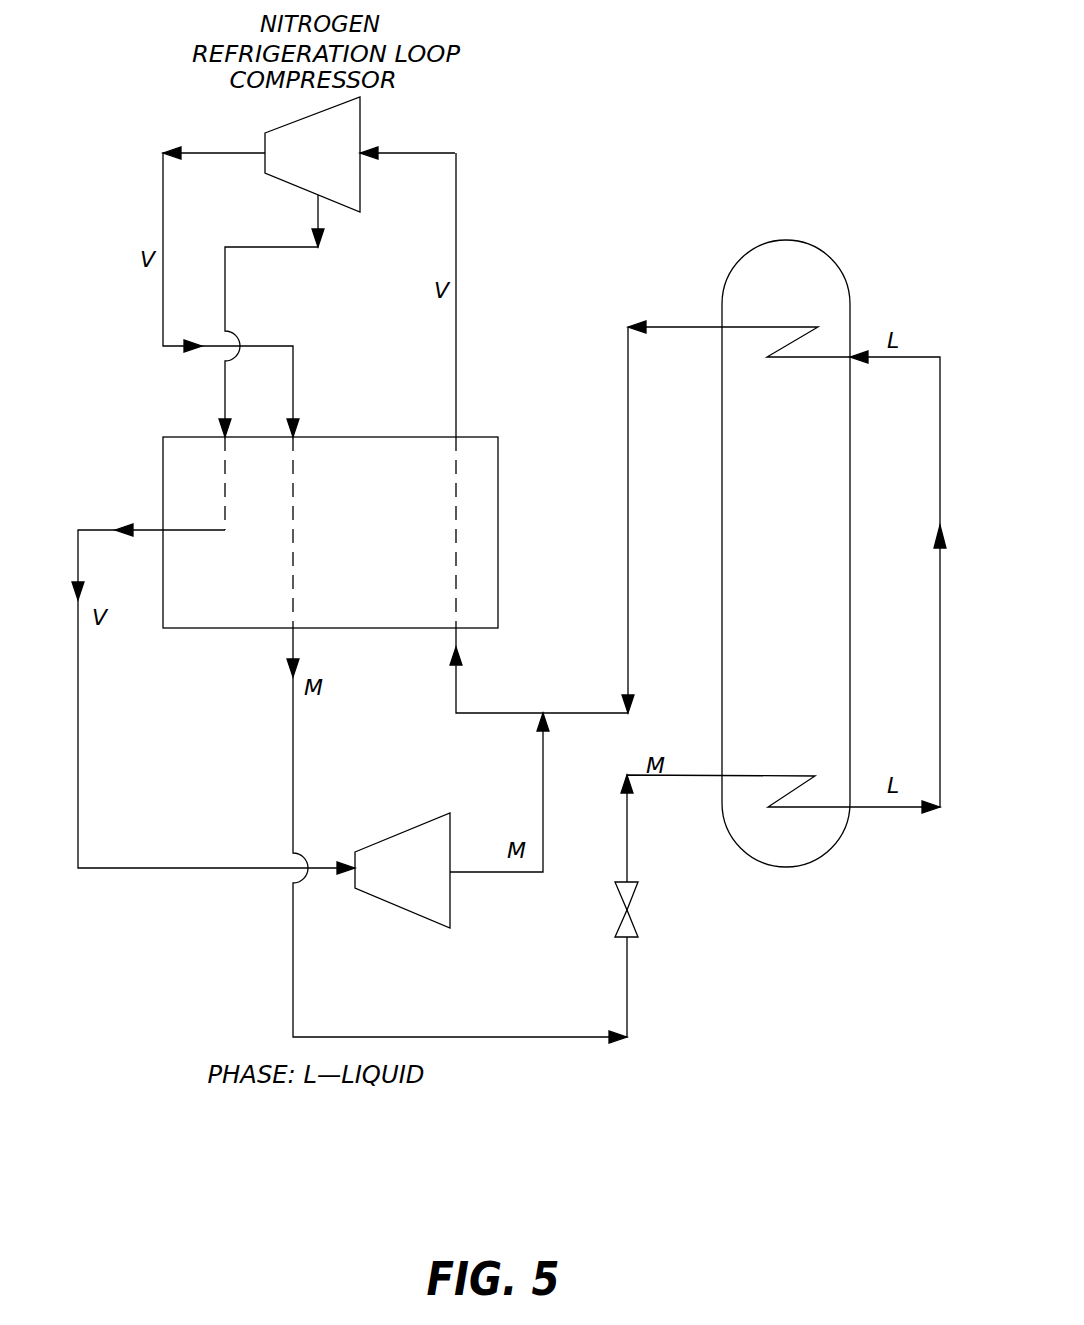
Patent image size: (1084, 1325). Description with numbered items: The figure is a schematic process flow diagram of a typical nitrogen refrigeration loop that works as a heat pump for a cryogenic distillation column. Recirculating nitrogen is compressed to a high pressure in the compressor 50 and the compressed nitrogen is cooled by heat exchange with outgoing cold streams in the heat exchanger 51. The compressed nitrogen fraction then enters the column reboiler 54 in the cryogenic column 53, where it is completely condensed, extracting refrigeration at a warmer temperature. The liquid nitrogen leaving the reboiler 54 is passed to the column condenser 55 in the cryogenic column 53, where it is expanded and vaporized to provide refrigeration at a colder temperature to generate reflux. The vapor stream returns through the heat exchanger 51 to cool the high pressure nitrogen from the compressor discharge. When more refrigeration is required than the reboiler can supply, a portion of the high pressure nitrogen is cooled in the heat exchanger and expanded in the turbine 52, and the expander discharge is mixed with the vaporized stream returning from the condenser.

The compressor 50 is at (372, 204).
The heat exchanger 51 is at (498, 573).
The turbine 52 is at (419, 823).
The cryogenic column 53 is at (850, 598).
The column reboiler 54 is at (817, 847).
The column condenser 55 is at (818, 250).